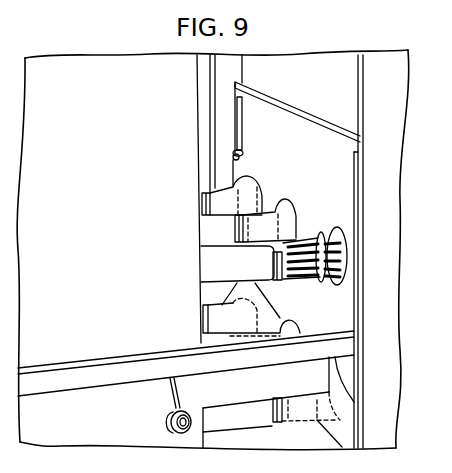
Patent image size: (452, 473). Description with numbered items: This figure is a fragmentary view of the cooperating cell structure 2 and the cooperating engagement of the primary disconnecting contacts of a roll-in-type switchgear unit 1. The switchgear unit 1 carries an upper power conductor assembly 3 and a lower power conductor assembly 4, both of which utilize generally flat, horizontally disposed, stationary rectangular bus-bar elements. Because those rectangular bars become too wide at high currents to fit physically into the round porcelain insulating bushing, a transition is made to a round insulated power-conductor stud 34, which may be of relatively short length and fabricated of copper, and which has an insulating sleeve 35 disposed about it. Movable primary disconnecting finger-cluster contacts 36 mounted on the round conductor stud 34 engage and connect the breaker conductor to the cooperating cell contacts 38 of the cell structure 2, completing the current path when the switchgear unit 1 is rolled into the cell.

The roll-in-type switchgear unit 1 is at (106, 177).
The cell structure 2 is at (390, 274).
The upper power conductor assembly 3 is at (213, 272).
The lower power conductor assembly 4 is at (250, 421).
The round insulated power-conductor stud 34 is at (275, 275).
The insulating sleeve 35 is at (217, 253).
The movable primary disconnecting finger-cluster contacts 36 is at (304, 279).
The cell contacts 38 is at (330, 229).